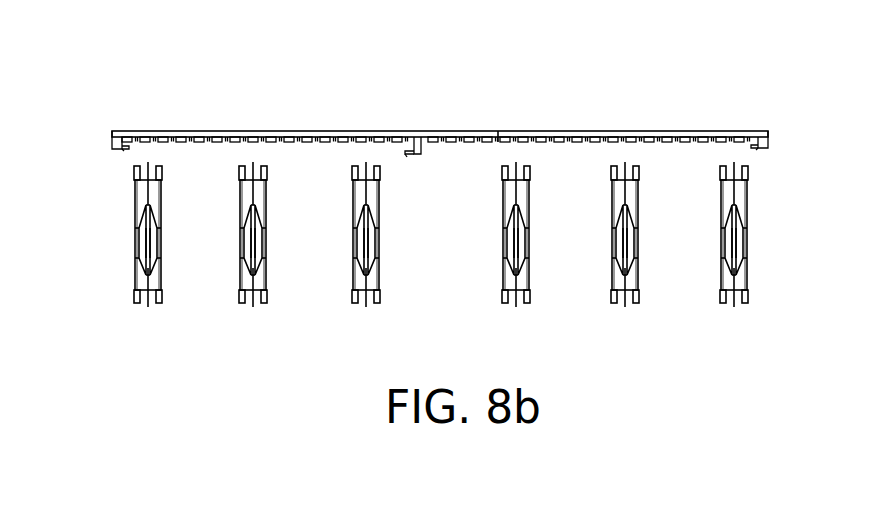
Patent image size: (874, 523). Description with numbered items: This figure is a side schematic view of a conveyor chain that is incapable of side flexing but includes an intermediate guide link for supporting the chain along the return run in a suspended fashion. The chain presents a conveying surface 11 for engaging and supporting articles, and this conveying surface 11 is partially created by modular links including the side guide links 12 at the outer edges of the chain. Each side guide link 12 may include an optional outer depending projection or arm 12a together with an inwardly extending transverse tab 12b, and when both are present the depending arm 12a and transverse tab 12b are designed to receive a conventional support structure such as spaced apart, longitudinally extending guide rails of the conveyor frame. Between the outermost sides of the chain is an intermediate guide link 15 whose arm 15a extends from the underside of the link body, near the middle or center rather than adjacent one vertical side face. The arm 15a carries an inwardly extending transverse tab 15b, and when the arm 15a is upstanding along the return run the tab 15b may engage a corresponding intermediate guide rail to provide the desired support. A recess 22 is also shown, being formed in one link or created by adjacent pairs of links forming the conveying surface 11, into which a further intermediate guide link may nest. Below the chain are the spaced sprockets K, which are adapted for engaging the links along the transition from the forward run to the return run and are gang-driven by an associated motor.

The conveying surface 11 is at (600, 122).
The side guide link 12 is at (112, 130).
The outer depending projection or arm 12a is at (112, 148).
The inwardly extending transverse tab 12b is at (124, 152).
The intermediate guide link 15 is at (426, 126).
The arm 15a is at (422, 153).
The transverse tab 15b is at (416, 160).
The recess 22 is at (498, 132).
The sprocket K is at (353, 276).